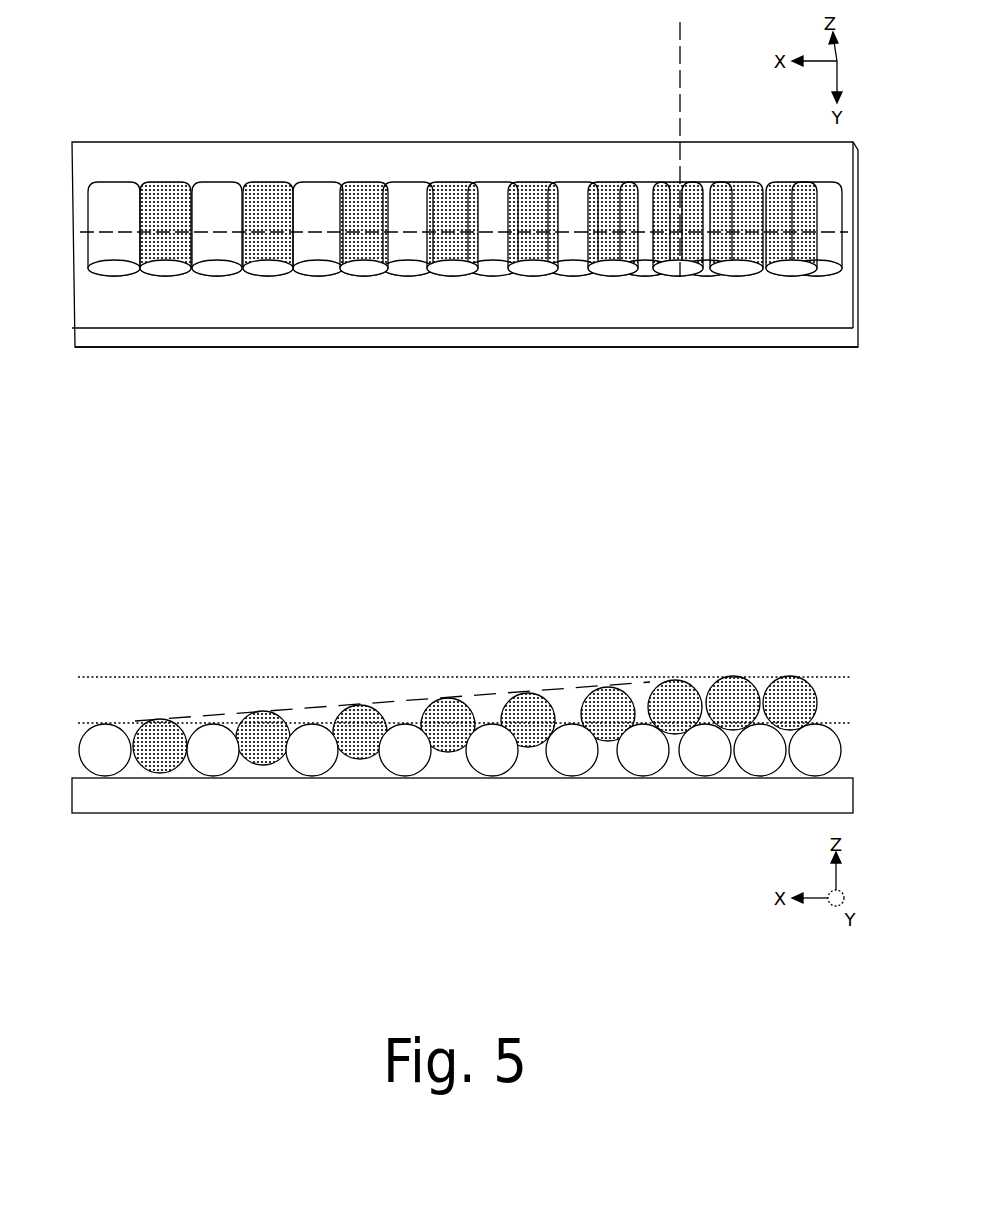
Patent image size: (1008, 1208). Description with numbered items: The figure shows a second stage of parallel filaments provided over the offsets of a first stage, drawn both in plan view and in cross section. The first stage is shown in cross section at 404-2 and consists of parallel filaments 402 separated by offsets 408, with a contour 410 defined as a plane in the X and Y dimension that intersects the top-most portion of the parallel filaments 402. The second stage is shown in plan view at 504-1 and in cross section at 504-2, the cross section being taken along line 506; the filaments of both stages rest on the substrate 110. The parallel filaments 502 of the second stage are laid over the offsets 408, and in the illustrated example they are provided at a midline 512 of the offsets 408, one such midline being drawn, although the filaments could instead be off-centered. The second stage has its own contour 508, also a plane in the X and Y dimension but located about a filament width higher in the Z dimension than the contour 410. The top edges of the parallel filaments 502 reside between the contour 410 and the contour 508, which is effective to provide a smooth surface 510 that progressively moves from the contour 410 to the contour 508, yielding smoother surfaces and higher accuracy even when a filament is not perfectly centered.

The substrate 110 is at (152, 340).
The parallel filaments 402 is at (637, 725).
The cross-section view of stage 404-2 is at (58, 757).
The offsets 408 is at (193, 284).
The contour 410 is at (243, 718).
The parallel filaments 502 is at (357, 705).
The plan view of stage 504-1 is at (465, 379).
The cross-section view of stage 504-2 is at (855, 686).
The line 506 is at (113, 230).
The contour 508 is at (412, 678).
The smooth surface 510 is at (573, 690).
The midline 512 is at (680, 62).